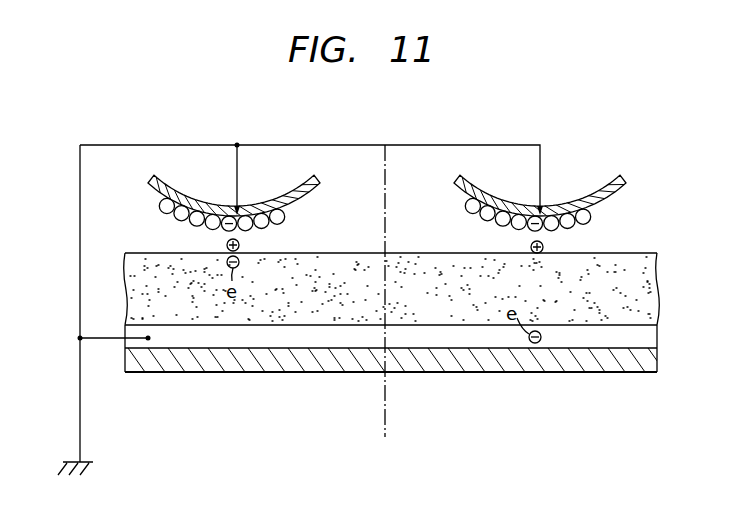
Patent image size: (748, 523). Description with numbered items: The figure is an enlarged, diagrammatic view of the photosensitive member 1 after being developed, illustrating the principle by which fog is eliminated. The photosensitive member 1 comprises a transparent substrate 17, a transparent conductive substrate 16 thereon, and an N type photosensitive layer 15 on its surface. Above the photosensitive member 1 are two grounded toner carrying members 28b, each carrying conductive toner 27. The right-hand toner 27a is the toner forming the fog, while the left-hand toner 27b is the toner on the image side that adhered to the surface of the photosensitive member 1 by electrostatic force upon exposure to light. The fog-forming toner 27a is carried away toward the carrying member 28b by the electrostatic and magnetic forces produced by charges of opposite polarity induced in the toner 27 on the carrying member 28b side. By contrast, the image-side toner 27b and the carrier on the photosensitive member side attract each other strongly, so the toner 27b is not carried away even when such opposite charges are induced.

The photosensitive member 1 is at (421, 322).
The photosensitive layer 15 is at (648, 288).
The transparent conductive substrate 16 is at (645, 337).
The transparent substrate 17 is at (405, 370).
The conductive toner 27 is at (285, 218).
The fog-forming toner 27a is at (544, 249).
The image-side toner 27b is at (240, 244).
The toner carrying member 28b is at (315, 181).